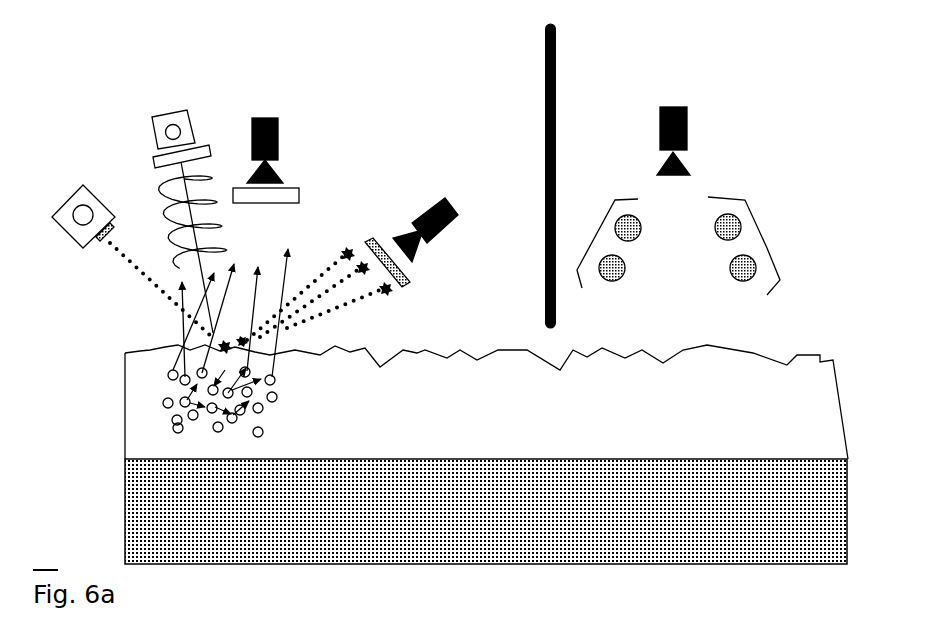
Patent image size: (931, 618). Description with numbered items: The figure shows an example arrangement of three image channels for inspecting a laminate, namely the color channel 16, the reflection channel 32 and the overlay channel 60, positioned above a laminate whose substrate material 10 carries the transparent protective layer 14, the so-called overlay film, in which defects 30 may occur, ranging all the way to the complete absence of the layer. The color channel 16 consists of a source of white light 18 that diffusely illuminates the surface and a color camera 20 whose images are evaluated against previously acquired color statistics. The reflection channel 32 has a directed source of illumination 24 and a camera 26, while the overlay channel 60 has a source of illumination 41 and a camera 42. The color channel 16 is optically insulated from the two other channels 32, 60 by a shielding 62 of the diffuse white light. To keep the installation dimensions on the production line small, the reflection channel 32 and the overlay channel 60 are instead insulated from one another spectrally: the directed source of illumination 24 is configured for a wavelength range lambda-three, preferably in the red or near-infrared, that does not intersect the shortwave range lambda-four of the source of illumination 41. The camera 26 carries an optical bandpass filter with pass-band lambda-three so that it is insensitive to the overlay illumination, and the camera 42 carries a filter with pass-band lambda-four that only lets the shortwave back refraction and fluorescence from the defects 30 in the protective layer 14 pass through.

The substrate material 10 is at (162, 522).
The transparent protective layer 14 is at (140, 437).
The defects 30 is at (170, 374).
The overlay channel 60 is at (172, 88).
The source of illumination 41 is at (185, 120).
The camera 42 is at (279, 134).
The reflection channel 32 is at (62, 176).
The directed source of illumination 24 is at (67, 218).
The camera 26 is at (450, 229).
The shielding 62 is at (557, 55).
The color channel 16 is at (724, 141).
The color camera 20 is at (679, 107).
The source of white light 18 is at (767, 249).